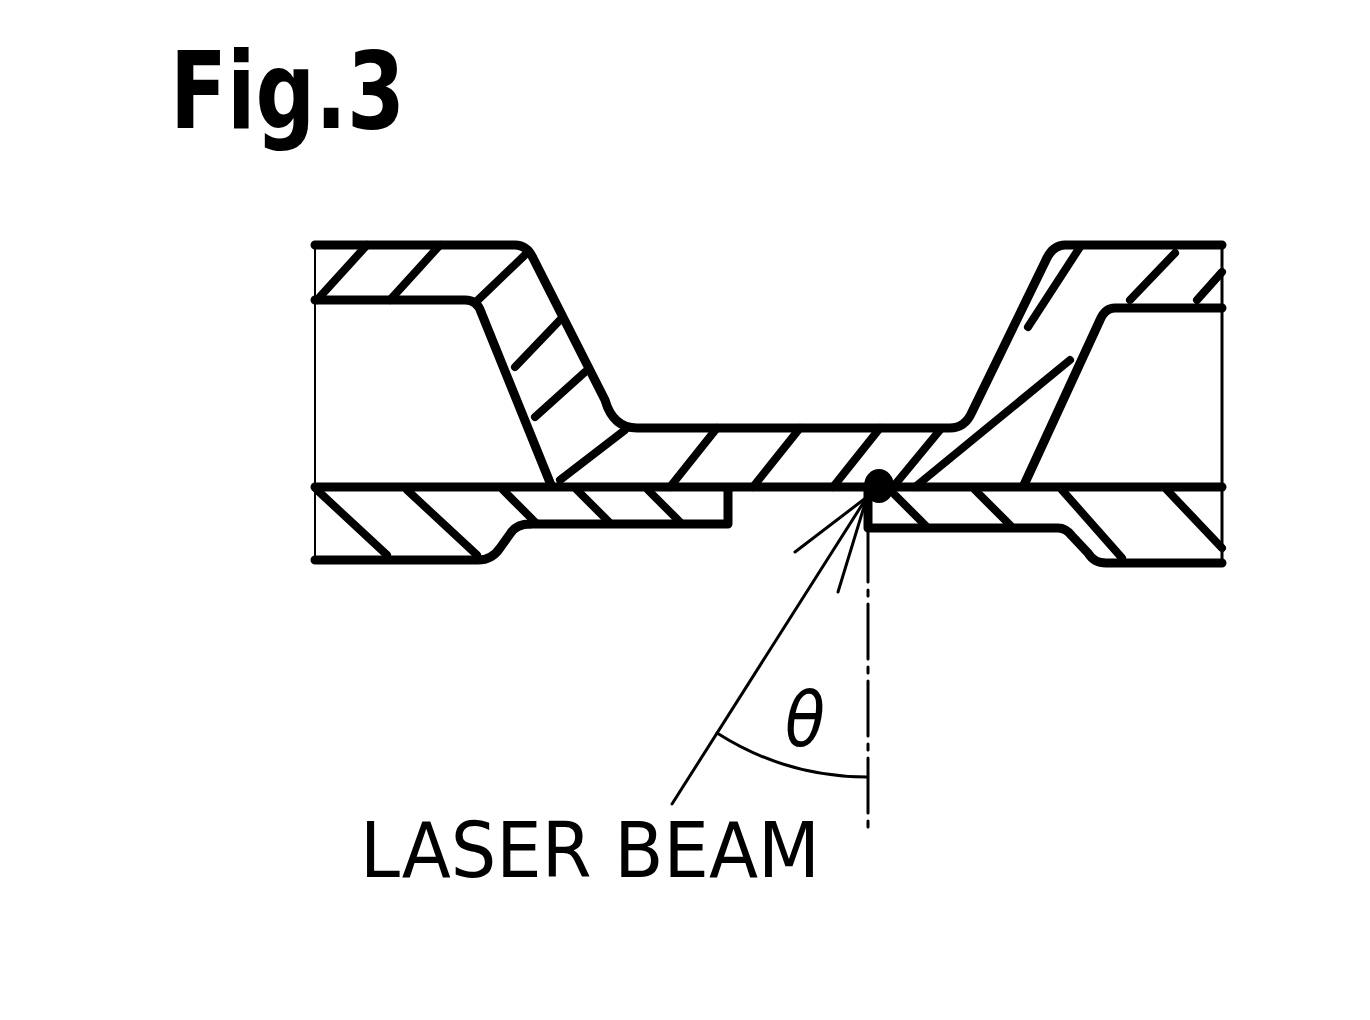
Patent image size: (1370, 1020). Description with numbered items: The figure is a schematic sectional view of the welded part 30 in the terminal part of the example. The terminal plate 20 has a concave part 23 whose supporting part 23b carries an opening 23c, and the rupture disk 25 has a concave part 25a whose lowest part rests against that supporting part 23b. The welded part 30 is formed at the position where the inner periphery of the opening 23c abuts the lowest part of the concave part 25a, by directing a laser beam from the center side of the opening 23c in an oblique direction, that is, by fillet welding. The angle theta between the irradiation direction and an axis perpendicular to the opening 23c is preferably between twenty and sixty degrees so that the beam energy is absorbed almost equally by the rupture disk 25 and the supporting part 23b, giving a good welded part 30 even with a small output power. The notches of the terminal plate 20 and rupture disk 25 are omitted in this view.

The terminal plate 20 is at (703, 588).
The concave part 23 is at (410, 536).
The supporting part 23b is at (978, 508).
The opening 23c is at (770, 496).
The rupture disk 25 is at (821, 361).
The concave part 25a is at (697, 426).
The welded part 30 is at (884, 470).